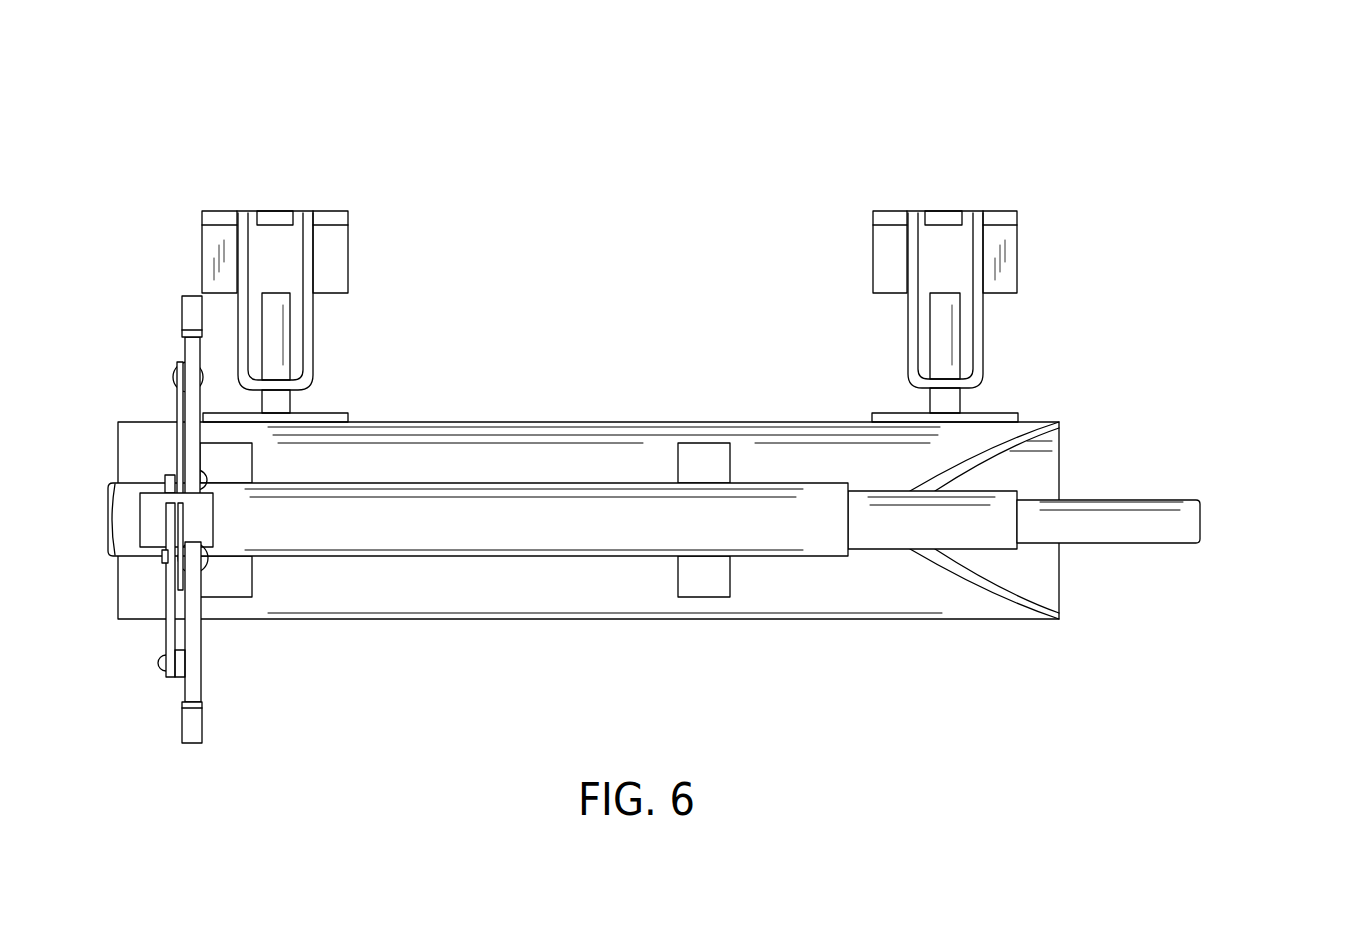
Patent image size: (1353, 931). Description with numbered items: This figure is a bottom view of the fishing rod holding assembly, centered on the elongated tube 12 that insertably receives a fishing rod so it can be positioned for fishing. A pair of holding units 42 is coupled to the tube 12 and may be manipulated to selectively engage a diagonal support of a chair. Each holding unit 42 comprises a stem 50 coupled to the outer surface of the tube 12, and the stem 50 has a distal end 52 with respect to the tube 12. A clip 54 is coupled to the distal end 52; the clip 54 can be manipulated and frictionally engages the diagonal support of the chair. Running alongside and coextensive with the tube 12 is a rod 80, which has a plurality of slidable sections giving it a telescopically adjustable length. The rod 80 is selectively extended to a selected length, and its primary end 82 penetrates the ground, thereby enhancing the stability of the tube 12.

The tube 12 is at (642, 422).
The holding unit 42 is at (662, 231).
The stem 50 is at (958, 347).
The distal end 52 is at (953, 293).
The clip 54 is at (872, 250).
The rod 80 is at (495, 555).
The primary end 82 is at (1200, 512).